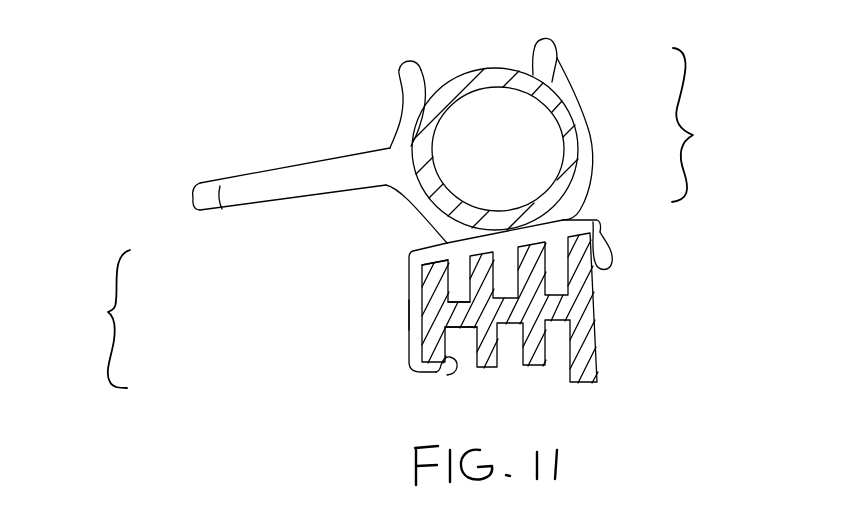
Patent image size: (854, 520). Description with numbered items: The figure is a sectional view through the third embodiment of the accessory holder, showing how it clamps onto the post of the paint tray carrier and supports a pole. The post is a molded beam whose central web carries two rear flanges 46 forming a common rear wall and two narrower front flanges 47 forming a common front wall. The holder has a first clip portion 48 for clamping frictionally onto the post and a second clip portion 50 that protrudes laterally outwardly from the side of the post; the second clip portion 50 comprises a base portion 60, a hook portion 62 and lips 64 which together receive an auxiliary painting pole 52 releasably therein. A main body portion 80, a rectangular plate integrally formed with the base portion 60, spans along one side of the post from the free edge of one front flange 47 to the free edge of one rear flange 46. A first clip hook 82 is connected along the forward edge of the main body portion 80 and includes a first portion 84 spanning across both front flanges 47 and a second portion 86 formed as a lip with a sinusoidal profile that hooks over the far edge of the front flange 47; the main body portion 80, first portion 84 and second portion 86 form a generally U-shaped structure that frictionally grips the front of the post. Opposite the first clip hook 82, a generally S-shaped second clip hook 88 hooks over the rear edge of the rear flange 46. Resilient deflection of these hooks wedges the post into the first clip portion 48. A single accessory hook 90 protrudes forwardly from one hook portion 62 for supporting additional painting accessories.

The rear flanges 46 is at (603, 235).
The front flanges 47 is at (433, 340).
The first clip portion 48 is at (89, 319).
The second clip portion 50 is at (713, 125).
The auxiliary painting pole 52 is at (487, 82).
The base portion 60 is at (497, 220).
The hook portion 62 is at (392, 125).
The lips 64 is at (413, 67).
The main body portion 80 is at (530, 238).
The first clip hook 82 is at (384, 276).
The first portion 84 is at (425, 283).
The second portion 86 is at (444, 378).
The second clip hook 88 is at (610, 250).
The accessory hook 90 is at (275, 177).